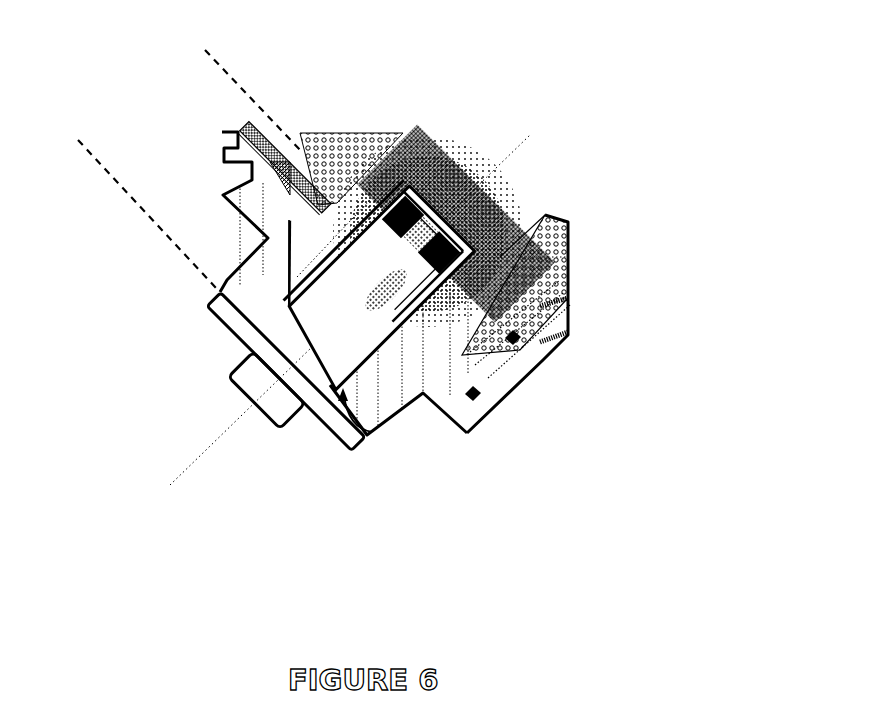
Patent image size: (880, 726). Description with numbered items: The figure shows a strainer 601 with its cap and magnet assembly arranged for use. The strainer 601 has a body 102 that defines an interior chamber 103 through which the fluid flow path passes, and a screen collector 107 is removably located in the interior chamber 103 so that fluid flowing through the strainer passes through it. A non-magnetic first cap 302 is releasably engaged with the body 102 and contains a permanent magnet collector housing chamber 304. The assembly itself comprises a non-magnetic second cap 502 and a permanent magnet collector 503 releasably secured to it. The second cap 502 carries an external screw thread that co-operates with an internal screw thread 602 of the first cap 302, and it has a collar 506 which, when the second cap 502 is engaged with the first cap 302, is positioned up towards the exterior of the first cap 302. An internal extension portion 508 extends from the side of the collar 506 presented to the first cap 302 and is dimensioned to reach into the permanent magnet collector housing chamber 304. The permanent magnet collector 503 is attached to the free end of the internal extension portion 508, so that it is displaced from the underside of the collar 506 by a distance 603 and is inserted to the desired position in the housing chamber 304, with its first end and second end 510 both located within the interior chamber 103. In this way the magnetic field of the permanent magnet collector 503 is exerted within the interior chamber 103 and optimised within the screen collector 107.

The body 102 is at (565, 308).
The interior chamber 103 is at (556, 197).
The screen collector 107 is at (553, 243).
The first cap 302 is at (463, 405).
The permanent magnet collector housing chamber 304 is at (410, 180).
The second cap 502 is at (200, 357).
The permanent magnet collector 503 is at (492, 270).
The collar 506 is at (250, 338).
The internal extension portion 508 is at (323, 357).
The second end 510 is at (407, 282).
The strainer 601 is at (610, 484).
The internal screw thread 602 is at (362, 425).
The distance 603 is at (218, 63).